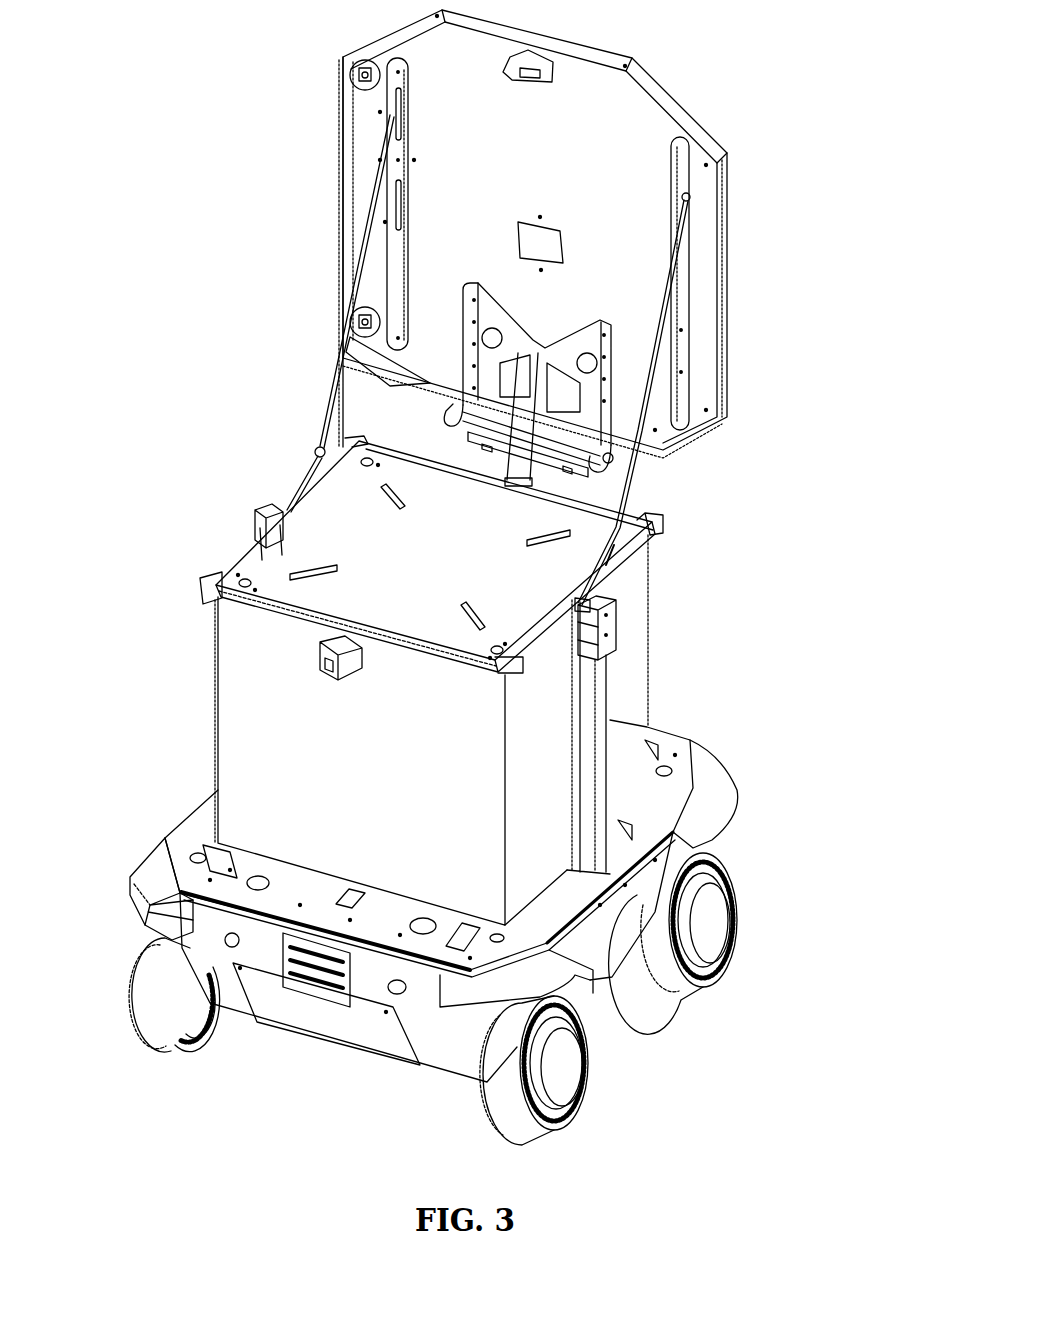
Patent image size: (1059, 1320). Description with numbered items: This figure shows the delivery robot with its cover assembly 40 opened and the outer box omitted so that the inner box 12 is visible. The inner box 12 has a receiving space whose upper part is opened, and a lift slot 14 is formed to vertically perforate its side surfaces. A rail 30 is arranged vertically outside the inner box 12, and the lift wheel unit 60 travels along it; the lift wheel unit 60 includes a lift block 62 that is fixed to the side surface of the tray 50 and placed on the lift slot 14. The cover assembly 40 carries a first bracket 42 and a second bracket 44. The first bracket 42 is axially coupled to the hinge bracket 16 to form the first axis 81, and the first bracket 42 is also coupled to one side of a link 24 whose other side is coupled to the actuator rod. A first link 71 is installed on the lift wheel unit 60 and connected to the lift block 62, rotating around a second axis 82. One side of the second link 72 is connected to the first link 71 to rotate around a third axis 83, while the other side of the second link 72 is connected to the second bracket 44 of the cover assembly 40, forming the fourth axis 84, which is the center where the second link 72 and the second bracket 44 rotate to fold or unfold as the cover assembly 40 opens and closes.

The inner box 12 is at (257, 710).
The lift slot 14 is at (575, 738).
The hinge bracket 16 is at (578, 467).
The link 24 is at (517, 463).
The rail 30 is at (610, 692).
The cover assembly 40 is at (692, 100).
The first bracket 42 is at (553, 345).
The second bracket 44 is at (406, 180).
The tray 50 is at (285, 556).
The lift wheel unit 60 is at (620, 620).
The lift block 62 is at (575, 618).
The first link 71 is at (610, 557).
The second link 72 is at (658, 375).
The first axis 81 is at (614, 460).
The second axis 82 is at (577, 603).
The third axis 83 is at (664, 527).
The fourth axis 84 is at (690, 199).